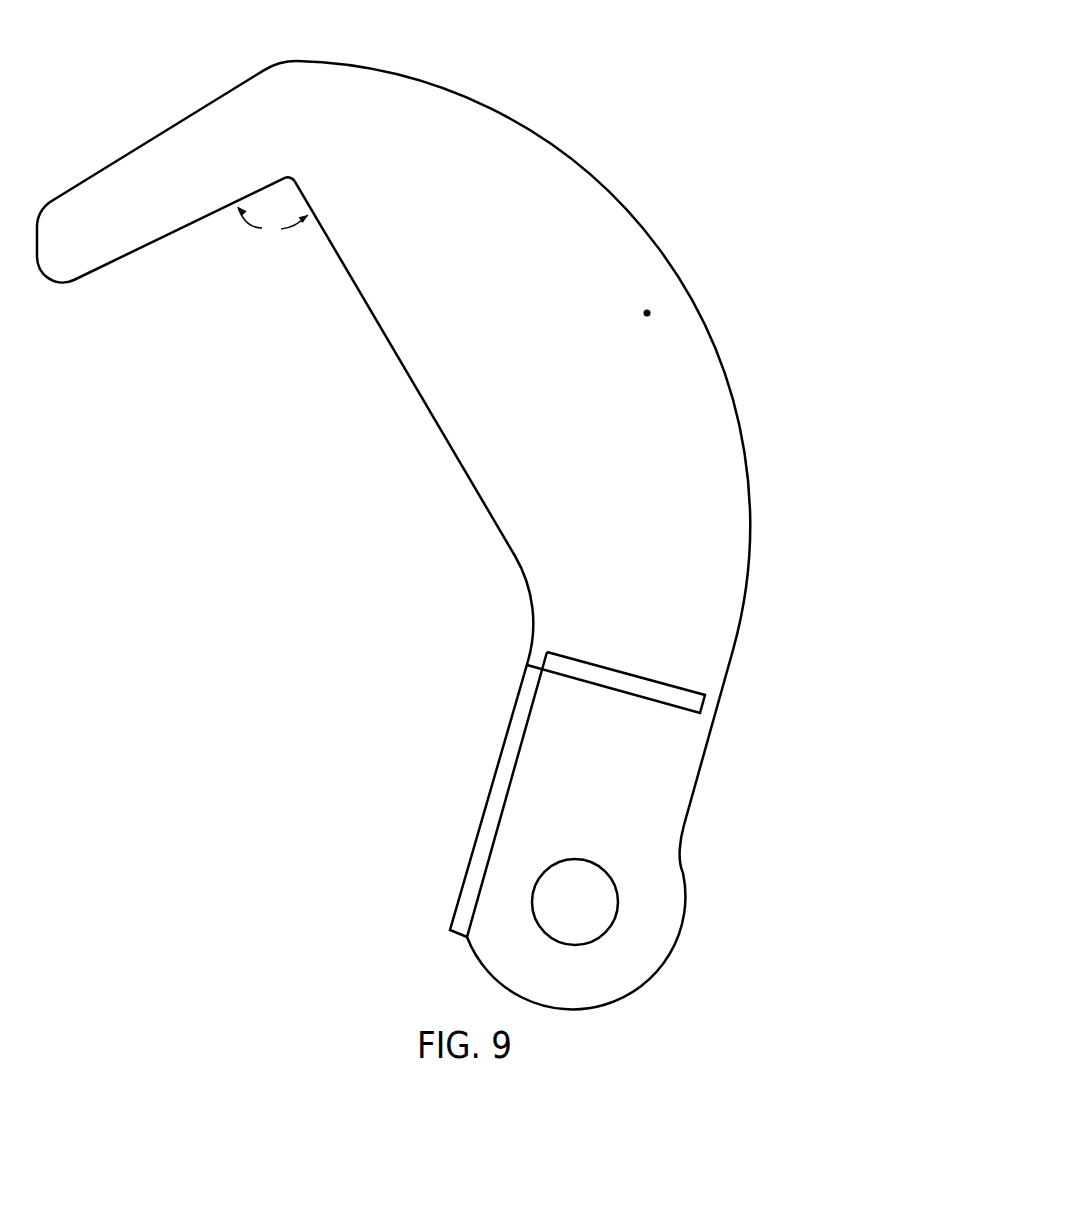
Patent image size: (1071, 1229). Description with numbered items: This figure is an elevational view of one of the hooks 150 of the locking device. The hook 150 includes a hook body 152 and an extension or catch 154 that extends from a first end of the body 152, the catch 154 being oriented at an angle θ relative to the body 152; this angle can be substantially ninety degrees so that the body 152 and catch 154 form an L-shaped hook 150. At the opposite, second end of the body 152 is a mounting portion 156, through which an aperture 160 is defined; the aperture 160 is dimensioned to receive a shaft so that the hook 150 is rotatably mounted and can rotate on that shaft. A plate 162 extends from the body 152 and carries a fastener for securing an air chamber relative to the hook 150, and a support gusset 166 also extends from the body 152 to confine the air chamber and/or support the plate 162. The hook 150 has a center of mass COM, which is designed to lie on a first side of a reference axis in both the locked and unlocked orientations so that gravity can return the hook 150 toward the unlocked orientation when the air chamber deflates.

The hook 150 is at (412, 528).
The hook body 152 is at (543, 177).
The catch 154 is at (120, 182).
The mounting portion 156 is at (627, 913).
The aperture 160 is at (617, 900).
The plate 162 is at (497, 795).
The support gusset 166 is at (697, 702).
The center of mass COM is at (647, 313).